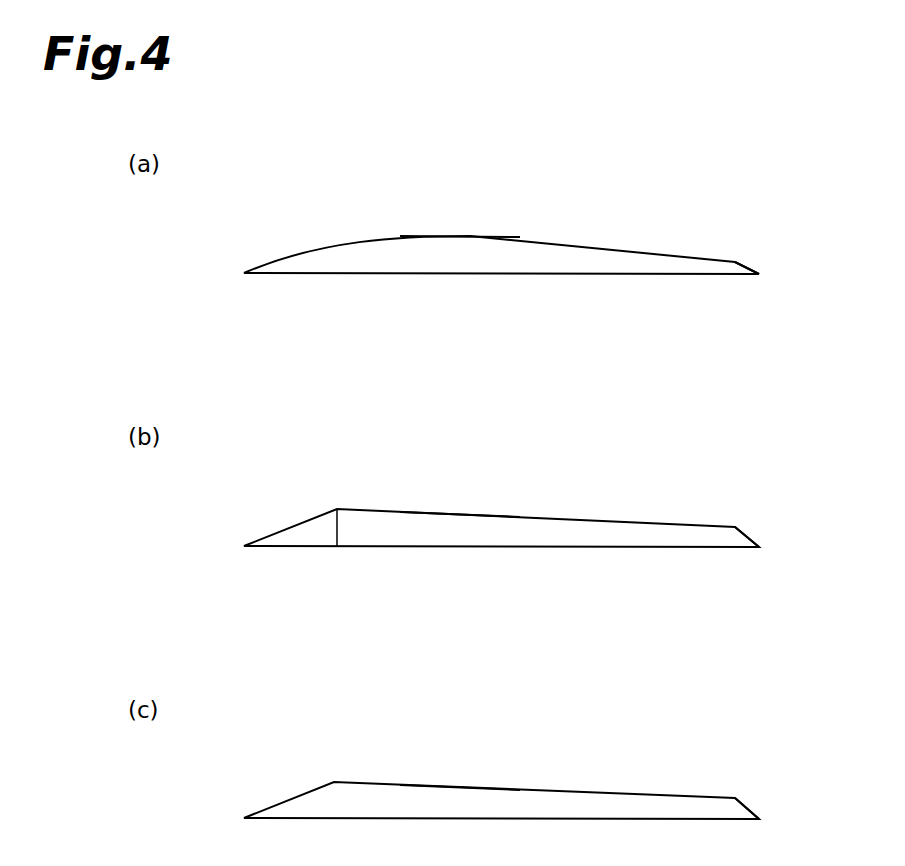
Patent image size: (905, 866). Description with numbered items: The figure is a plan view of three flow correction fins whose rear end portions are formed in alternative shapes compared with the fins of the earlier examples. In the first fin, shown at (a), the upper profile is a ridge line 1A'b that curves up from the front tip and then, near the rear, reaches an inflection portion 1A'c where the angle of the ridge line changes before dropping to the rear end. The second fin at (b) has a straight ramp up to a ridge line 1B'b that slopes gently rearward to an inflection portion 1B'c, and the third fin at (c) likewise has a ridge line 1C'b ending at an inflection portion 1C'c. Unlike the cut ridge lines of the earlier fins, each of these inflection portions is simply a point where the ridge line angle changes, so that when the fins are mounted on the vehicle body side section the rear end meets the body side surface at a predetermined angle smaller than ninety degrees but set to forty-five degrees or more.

The ridge line 1A'b is at (474, 208).
The inflection portion 1A'c is at (776, 245).
The ridge line 1B'b is at (474, 487).
The inflection portion 1B'c is at (776, 514).
The ridge line 1C'b is at (474, 759).
The inflection portion 1C'c is at (776, 785).